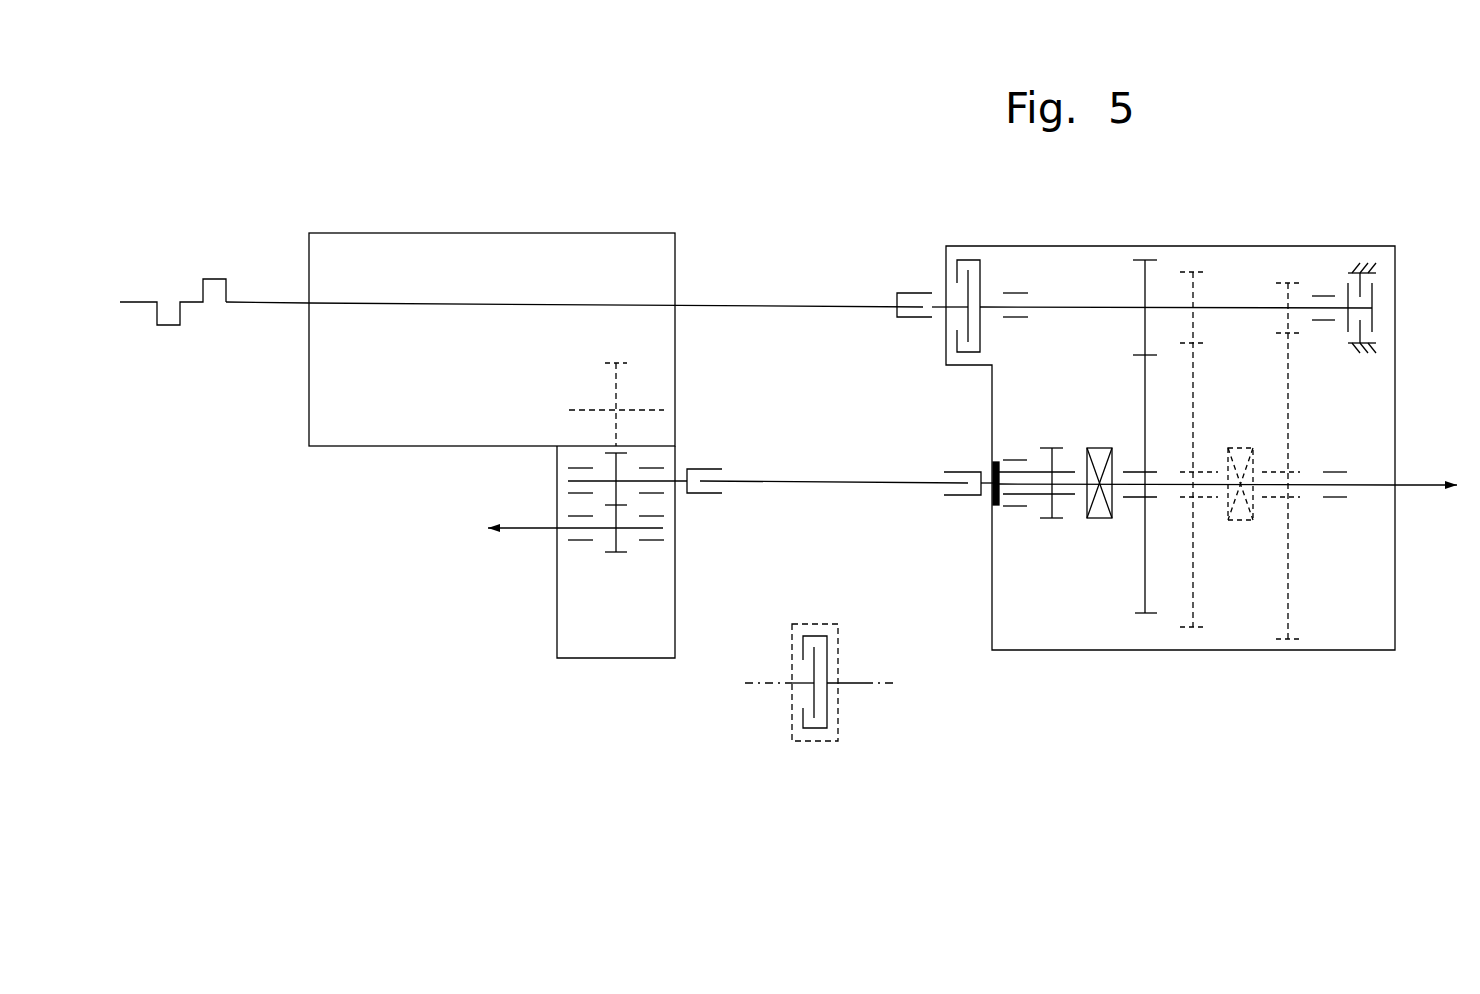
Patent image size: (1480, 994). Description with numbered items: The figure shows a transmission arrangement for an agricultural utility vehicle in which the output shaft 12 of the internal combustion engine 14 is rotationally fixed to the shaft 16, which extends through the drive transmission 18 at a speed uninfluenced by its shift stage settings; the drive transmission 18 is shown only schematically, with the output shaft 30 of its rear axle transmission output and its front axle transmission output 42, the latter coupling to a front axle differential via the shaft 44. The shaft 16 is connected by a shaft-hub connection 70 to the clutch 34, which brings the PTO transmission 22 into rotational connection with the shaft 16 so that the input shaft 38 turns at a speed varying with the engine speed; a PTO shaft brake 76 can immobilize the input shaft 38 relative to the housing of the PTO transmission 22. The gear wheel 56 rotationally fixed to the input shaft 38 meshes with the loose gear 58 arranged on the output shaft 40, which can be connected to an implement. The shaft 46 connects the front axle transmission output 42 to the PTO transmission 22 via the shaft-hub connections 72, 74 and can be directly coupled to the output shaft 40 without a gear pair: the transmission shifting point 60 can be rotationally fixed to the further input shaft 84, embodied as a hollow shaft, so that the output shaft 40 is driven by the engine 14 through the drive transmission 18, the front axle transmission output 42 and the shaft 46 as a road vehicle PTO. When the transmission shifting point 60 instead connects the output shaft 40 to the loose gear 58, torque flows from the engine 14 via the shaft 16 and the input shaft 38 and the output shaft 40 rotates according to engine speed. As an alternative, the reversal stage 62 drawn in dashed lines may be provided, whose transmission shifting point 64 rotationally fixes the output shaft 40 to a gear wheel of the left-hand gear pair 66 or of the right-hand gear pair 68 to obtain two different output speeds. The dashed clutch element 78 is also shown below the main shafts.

The output shaft of the internal combustion engine 12 is at (263, 302).
The internal combustion engine 14 is at (170, 297).
The shaft driven by the internal combustion engine 16 is at (777, 303).
The drive transmission 18 is at (472, 233).
The PTO transmission 22 is at (1245, 247).
The output shaft of the rear axle transmission output 30 is at (643, 407).
The clutch 34 is at (975, 259).
The input shaft of the PTO transmission 38 is at (1072, 302).
The output shaft of the PTO transmission 40 is at (1420, 483).
The front axle transmission output 42 is at (557, 615).
The shaft 44 is at (529, 532).
The shaft 46 is at (805, 480).
The gear wheel 56 is at (1148, 275).
The loose gear 58 is at (1145, 582).
The transmission shifting point 60 is at (1098, 445).
The reversal stage 62 is at (1267, 270).
The transmission shifting point 64 is at (1241, 532).
The left-hand gear pair 66 is at (1193, 652).
The right-hand gear pair 68 is at (1290, 652).
The shaft-hub connection 70 is at (920, 293).
The shaft-hub connection 72 is at (703, 468).
The shaft-hub connection 74 is at (948, 472).
The PTO shaft brake 76 is at (1350, 272).
The clutch 78 is at (847, 733).
The further input shaft 84 is at (1035, 497).